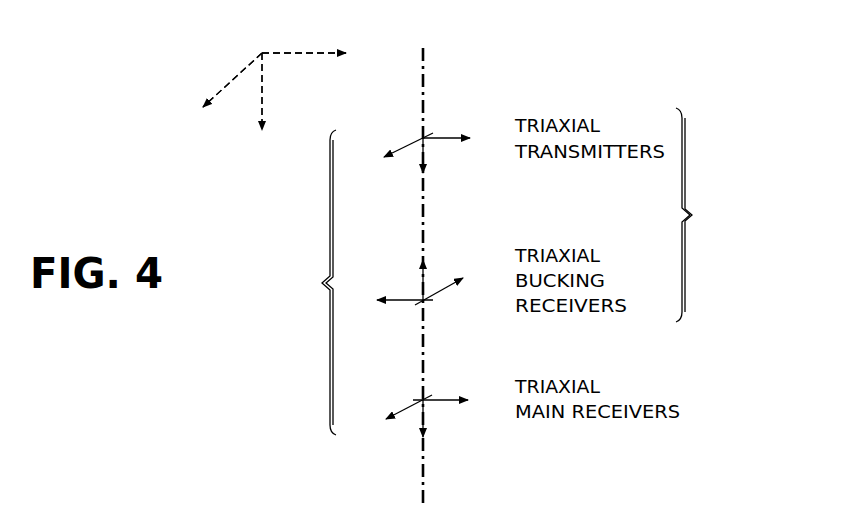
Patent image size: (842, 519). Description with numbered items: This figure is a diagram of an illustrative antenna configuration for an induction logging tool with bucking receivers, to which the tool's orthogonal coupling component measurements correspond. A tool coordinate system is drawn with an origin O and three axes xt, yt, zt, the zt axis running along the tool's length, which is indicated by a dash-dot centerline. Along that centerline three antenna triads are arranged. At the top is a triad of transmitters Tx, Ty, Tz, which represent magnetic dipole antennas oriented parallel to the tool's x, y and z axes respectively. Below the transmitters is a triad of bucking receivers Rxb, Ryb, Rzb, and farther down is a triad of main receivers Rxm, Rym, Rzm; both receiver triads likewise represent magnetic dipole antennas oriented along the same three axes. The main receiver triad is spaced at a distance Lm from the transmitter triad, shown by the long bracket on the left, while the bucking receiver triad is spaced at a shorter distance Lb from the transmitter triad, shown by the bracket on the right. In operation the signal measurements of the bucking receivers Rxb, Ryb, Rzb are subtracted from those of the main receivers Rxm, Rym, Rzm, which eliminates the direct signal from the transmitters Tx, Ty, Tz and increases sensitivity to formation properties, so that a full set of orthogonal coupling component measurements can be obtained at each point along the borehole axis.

The origin of tool coordinate system O is at (274, 80).
The x axis of tool coordinate system xt is at (314, 56).
The y axis of tool coordinate system yt is at (221, 89).
The z axis of tool coordinate system zt is at (257, 106).
The x-oriented transmitter Tx is at (459, 143).
The y-oriented transmitter Ty is at (393, 151).
The z-oriented transmitter Tz is at (437, 166).
The x-oriented bucking receiver Rxb is at (389, 300).
The y-oriented bucking receiver Ryb is at (453, 283).
The z-oriented bucking receiver Rzb is at (405, 269).
The x-oriented main receiver Rxm is at (457, 400).
The y-oriented main receiver Rym is at (390, 423).
The z-oriented main receiver Rzm is at (442, 428).
The main receiver spacing Lm is at (309, 282).
The bucking receiver spacing Lb is at (696, 215).